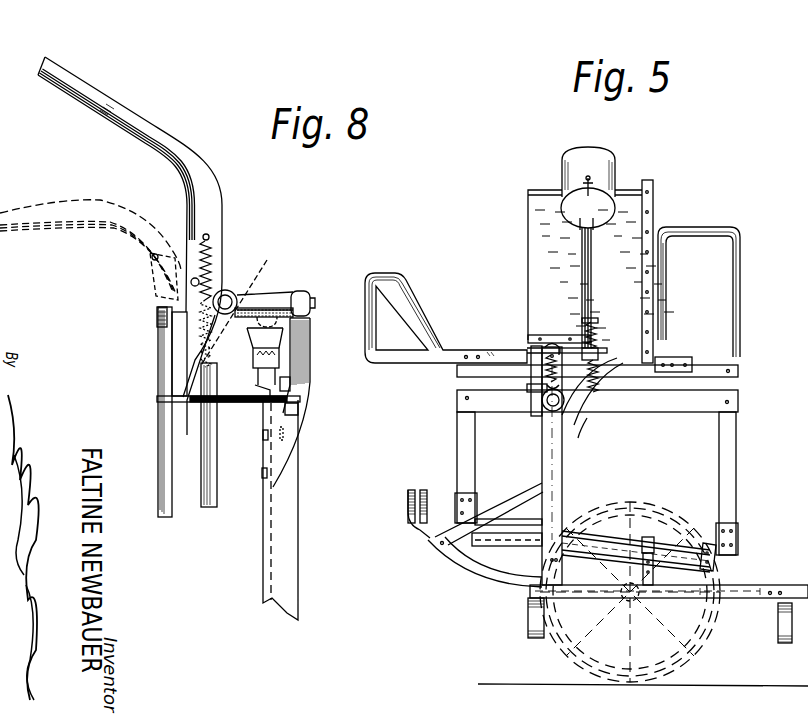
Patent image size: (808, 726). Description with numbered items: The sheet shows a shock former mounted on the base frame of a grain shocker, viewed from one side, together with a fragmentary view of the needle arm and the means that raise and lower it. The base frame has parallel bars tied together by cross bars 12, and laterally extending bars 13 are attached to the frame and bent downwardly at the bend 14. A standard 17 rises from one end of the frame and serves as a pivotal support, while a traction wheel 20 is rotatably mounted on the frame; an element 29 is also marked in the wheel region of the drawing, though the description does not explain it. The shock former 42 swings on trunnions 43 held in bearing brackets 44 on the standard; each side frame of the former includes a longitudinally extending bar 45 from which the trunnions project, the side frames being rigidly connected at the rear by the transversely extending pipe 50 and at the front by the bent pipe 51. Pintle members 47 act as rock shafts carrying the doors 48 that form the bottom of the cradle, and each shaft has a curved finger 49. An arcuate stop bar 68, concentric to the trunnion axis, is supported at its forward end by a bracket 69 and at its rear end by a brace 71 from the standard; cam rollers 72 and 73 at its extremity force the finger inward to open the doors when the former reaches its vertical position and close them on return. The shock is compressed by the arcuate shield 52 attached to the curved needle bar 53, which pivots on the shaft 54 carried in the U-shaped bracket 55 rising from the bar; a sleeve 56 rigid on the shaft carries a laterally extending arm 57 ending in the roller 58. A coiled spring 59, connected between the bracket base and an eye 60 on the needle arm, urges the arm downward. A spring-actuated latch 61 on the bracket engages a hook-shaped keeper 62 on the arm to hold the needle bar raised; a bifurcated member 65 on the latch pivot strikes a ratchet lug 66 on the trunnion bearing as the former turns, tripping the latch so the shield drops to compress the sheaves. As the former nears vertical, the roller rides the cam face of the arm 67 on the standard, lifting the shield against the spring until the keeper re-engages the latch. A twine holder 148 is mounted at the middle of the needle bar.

In FIG. 5, the cross bars 12 is at (800, 600).
In FIG. 5, the laterally extending bars 13 is at (535, 640).
In FIG. 5, the bend 14 is at (530, 613).
In FIG. 8, the standard 17 is at (291, 558).
In FIG. 5, the standard 17 is at (553, 483).
In FIG. 5, the traction wheel 20 is at (662, 512).
In FIG. 5, the wheel axle 29 is at (637, 510).
In FIG. 5, the shock former 42 is at (633, 442).
In FIG. 8, the trunnions 43 is at (291, 386).
In FIG. 5, the trunnions 43 is at (548, 409).
In FIG. 8, the bearing brackets 44 is at (270, 403).
In FIG. 5, the bearing brackets 44 is at (540, 378).
In FIG. 8, the longitudinally extending bar 45 is at (172, 383).
In FIG. 5, the longitudinally extending bar 45 is at (663, 412).
In FIG. 5, the pintle members 47 is at (600, 530).
In FIG. 5, the doors 48 is at (522, 547).
In FIG. 5, the finger 49 is at (581, 567).
In FIG. 5, the transversely extending bar or pipe 50 is at (420, 332).
In FIG. 5, the transversely extending pipe 51 is at (712, 243).
In FIG. 8, the shield 52 is at (116, 136).
In FIG. 5, the shield 52 is at (601, 266).
In FIG. 8, the needle bar 53 is at (171, 136).
In FIG. 5, the needle bar 53 is at (593, 273).
In FIG. 8, the shaft 54 is at (187, 393).
In FIG. 8, the bracket 55 is at (190, 400).
In FIG. 5, the bracket 55 is at (607, 358).
In FIG. 8, the sleeve 56 is at (215, 310).
In FIG. 5, the sleeve 56 is at (553, 348).
In FIG. 8, the laterally extending arm 57 is at (283, 300).
In FIG. 5, the laterally extending arm 57 is at (548, 354).
In FIG. 8, the roller 58 is at (311, 301).
In FIG. 5, the roller 58 is at (527, 389).
In FIG. 8, the coiled spring 59 is at (212, 258).
In FIG. 5, the coiled spring 59 is at (619, 394).
In FIG. 8, the eye 60 is at (209, 237).
In FIG. 5, the eye 60 is at (592, 322).
In FIG. 8, the spring actuated latch 61 is at (272, 342).
In FIG. 8, the hook-shaped keeper 62 is at (258, 320).
In FIG. 8, the bifurcated member 65 is at (302, 433).
In FIG. 8, the ratchet lug 66 is at (256, 386).
In FIG. 8, the arm 67 is at (311, 400).
In FIG. 5, the arm 67 is at (590, 415).
In FIG. 5, the arcuate stop bar 68 is at (495, 578).
In FIG. 5, the bracket 69 is at (656, 585).
In FIG. 5, the brace 71 is at (515, 508).
In FIG. 5, the cam roller 72 is at (408, 493).
In FIG. 5, the cam roller 73 is at (426, 492).
In FIG. 5, the twine holder 148 is at (617, 158).